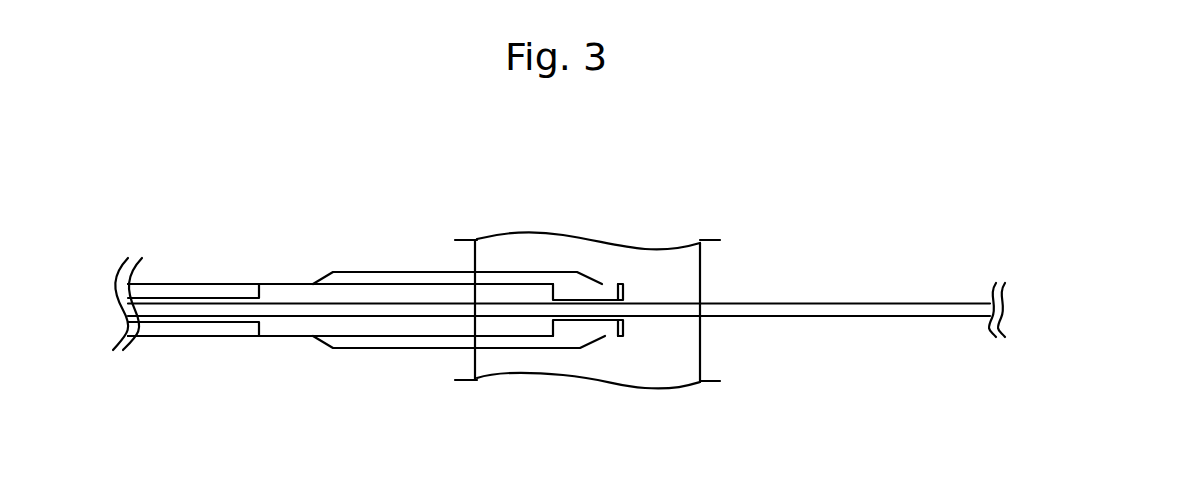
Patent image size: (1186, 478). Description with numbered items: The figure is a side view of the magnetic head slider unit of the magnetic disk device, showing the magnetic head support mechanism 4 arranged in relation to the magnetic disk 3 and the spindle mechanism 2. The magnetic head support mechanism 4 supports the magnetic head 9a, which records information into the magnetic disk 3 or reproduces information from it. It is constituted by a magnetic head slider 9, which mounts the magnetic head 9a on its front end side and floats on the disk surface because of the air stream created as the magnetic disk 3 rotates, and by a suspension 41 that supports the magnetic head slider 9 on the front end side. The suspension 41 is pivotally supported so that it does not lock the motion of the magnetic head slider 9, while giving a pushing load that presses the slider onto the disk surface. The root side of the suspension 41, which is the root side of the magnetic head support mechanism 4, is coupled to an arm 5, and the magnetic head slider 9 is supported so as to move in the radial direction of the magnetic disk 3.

The spindle mechanism 2 is at (702, 272).
The magnetic disk 3 is at (908, 310).
The magnetic head support mechanism 4 is at (277, 268).
The arm 5 is at (193, 291).
The magnetic head slider 9 is at (562, 297).
The magnetic head 9a is at (626, 295).
The suspension 41 is at (382, 275).